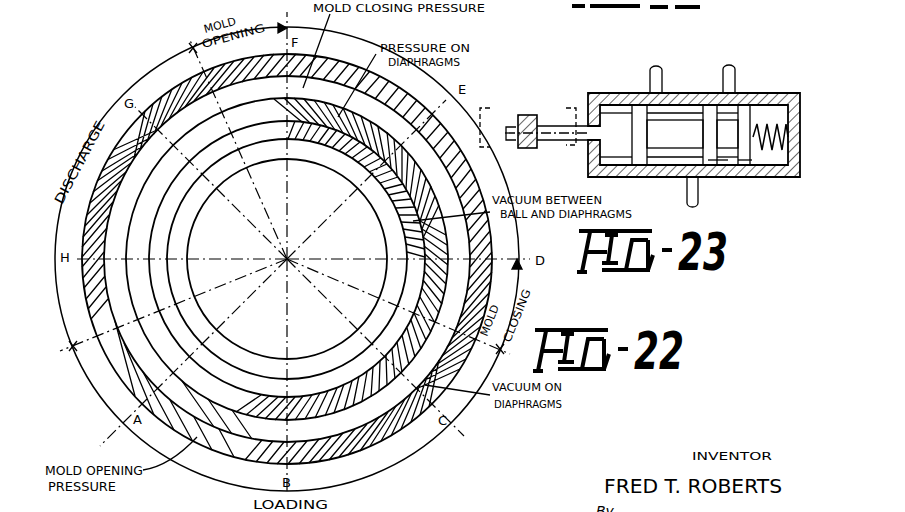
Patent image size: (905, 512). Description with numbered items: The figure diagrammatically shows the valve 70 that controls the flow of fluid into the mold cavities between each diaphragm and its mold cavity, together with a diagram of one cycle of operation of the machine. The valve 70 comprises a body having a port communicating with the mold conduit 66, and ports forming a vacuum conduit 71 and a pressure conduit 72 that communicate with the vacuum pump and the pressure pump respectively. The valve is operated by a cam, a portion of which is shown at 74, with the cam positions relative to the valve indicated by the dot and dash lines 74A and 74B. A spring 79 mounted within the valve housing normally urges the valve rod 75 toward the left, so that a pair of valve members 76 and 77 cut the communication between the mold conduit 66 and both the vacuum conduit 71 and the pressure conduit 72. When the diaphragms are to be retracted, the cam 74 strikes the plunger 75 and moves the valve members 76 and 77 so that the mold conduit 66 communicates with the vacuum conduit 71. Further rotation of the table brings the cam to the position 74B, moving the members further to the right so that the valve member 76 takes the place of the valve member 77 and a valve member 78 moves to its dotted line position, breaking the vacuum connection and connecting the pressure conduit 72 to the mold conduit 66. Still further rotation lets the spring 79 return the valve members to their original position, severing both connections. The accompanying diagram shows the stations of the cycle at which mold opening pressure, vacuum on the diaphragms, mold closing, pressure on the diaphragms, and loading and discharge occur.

The mold conduit 66 is at (697, 202).
The valve 70 is at (773, 177).
The vacuum conduit 71 is at (657, 84).
The pressure conduit 72 is at (732, 84).
The cam 74 is at (523, 117).
The cam position 74A is at (482, 106).
The cam position 74B is at (570, 107).
The valve rod 75 is at (533, 147).
The valve member 76 is at (716, 167).
The valve member 77 is at (744, 167).
The valve member 78 is at (638, 110).
The spring 79 is at (768, 125).